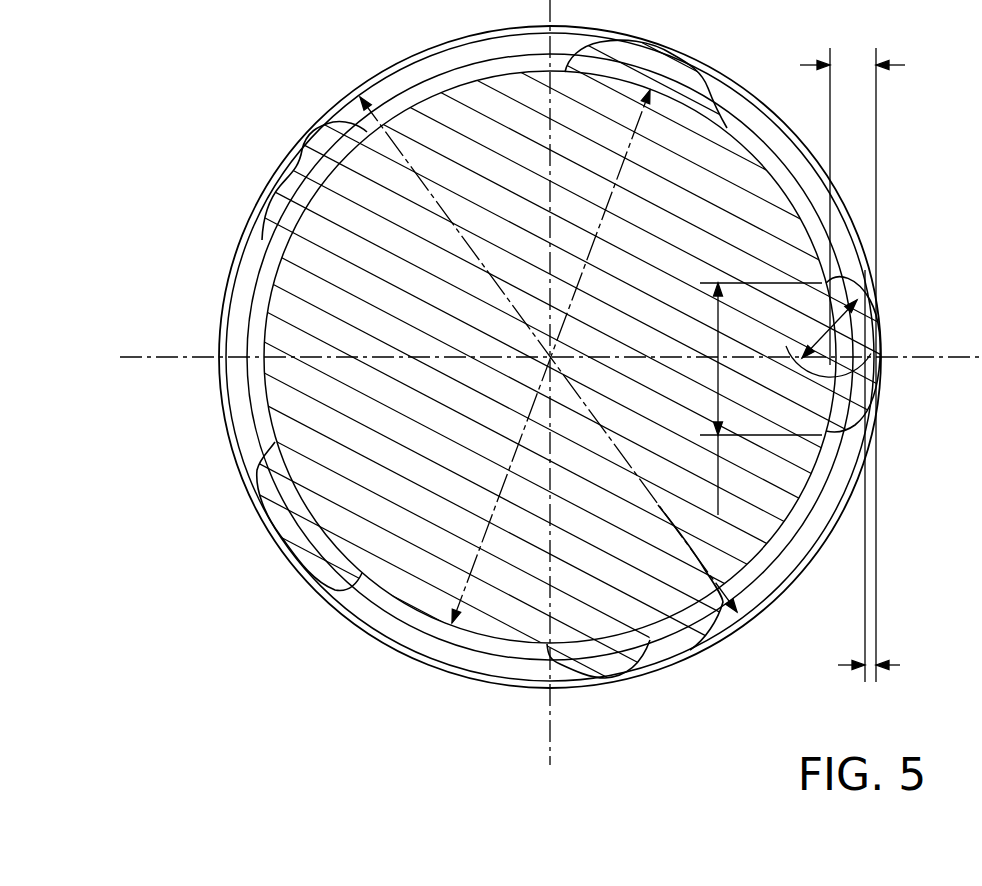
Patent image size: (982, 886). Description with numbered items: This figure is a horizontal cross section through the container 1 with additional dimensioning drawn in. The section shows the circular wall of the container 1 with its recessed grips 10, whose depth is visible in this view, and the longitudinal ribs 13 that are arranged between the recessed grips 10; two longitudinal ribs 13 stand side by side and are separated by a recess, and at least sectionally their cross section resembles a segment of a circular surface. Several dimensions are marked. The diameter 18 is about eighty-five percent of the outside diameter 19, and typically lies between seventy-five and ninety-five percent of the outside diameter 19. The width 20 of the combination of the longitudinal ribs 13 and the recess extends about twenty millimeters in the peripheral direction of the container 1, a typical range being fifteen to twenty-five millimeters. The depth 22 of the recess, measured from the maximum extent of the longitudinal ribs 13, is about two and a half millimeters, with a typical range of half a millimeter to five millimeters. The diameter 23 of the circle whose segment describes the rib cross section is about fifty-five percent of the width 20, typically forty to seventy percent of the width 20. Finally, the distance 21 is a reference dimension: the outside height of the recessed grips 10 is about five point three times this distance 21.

The container 1 is at (237, 162).
The recessed grips 10 is at (240, 396).
The longitudinal ribs 13 is at (878, 322).
The diameter 18 is at (496, 503).
The outside diameter 19 is at (658, 505).
The width 20 is at (717, 500).
The distance 21 is at (884, 65).
The depth 22 is at (884, 665).
The diameter 23 is at (858, 328).